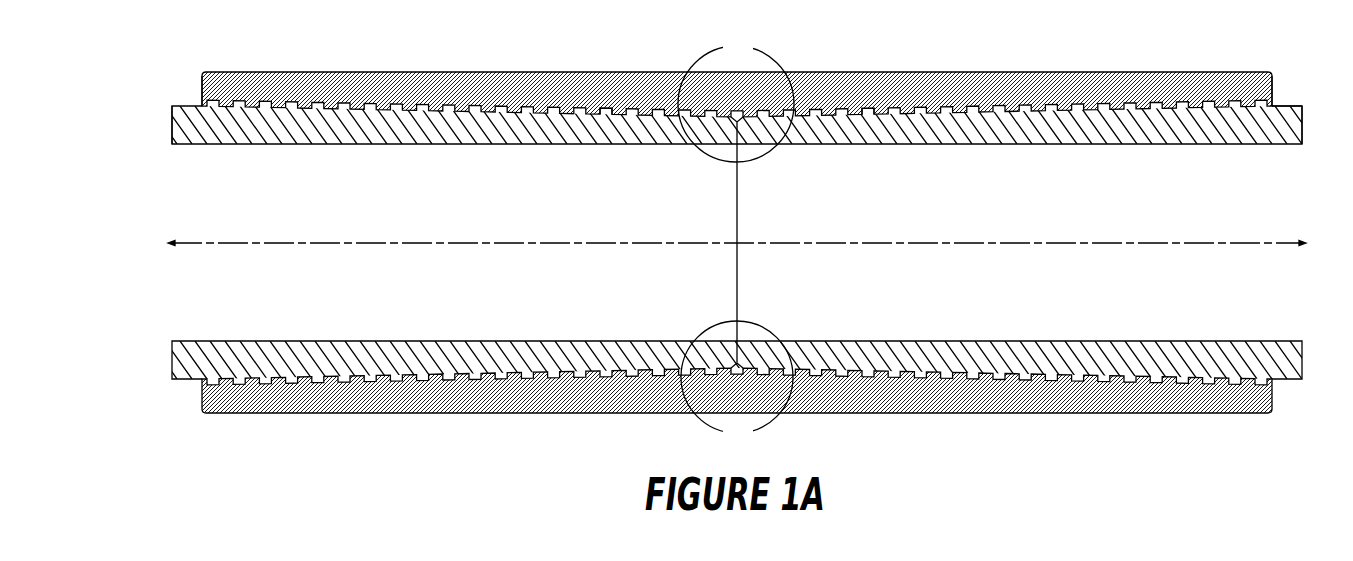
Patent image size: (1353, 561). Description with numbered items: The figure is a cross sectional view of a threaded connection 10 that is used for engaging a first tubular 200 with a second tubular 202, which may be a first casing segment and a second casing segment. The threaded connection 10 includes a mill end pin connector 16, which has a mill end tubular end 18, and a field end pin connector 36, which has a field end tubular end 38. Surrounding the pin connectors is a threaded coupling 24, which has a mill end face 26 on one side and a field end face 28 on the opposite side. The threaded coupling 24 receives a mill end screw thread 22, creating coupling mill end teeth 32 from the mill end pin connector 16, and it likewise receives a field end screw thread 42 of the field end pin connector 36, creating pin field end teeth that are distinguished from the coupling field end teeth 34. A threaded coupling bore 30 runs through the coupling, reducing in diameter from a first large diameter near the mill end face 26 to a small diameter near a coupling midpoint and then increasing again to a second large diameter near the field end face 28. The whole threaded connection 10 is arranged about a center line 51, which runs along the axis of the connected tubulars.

The threaded connection 10 is at (738, 228).
The mill end pin connector 16 is at (746, 109).
The mill end tubular end 18 is at (172, 123).
The mill end screw thread 22 is at (603, 106).
The threaded coupling 24 is at (737, 76).
The mill end face 26 is at (202, 75).
The field end face 28 is at (1272, 82).
The threaded coupling bore 30 is at (1273, 382).
The coupling mill end teeth 32 is at (563, 122).
The coupling field end teeth 34 is at (910, 123).
The field end pin connector 36 is at (1127, 127).
The field end tubular end 38 is at (1285, 105).
The field end screw thread 42 is at (870, 107).
The center line 51 is at (758, 243).
The first tubular 200 is at (1302, 126).
The second tubular 202 is at (172, 363).